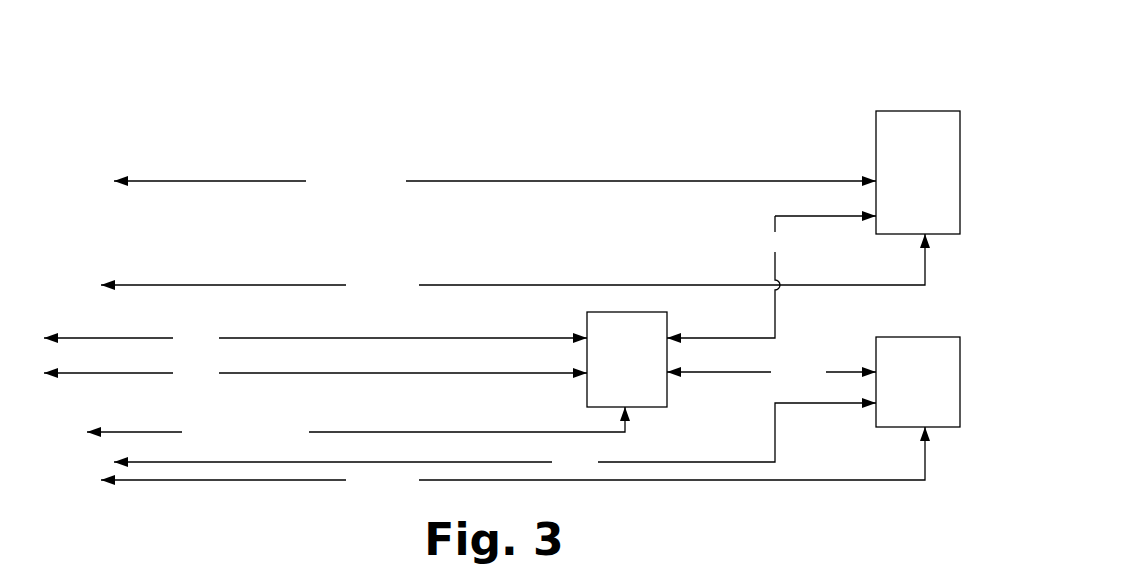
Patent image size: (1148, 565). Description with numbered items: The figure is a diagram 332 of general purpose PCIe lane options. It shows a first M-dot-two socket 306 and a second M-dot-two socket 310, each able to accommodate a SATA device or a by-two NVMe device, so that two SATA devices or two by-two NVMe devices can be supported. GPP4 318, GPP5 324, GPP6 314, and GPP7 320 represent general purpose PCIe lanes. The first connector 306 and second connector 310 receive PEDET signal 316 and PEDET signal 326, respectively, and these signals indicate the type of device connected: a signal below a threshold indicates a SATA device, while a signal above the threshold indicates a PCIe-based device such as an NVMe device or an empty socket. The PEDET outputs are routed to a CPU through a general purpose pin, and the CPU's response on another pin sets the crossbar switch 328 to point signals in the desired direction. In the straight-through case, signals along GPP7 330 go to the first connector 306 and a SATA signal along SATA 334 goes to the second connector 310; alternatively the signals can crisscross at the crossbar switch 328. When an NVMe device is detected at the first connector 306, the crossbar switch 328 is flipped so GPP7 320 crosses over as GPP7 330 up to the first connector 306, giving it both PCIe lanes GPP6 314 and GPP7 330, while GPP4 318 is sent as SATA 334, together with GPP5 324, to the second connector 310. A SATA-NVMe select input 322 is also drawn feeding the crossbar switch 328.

The first M.2 socket 306 is at (876, 160).
The second M.2 socket 310 is at (890, 427).
The GPP6 314 is at (548, 180).
The PEDET signal 316 is at (470, 285).
The GPP4 318 is at (290, 338).
The GPP7 320 is at (370, 373).
The SATA-NVMe-SEL signal line 322 is at (400, 432).
The GPP5 324 is at (712, 462).
The PEDET signal 326 is at (640, 480).
The crossbar switch 328 is at (630, 312).
The GPP7 330 is at (825, 216).
The diagram 332 is at (752, 65).
The SATA 334 is at (755, 372).